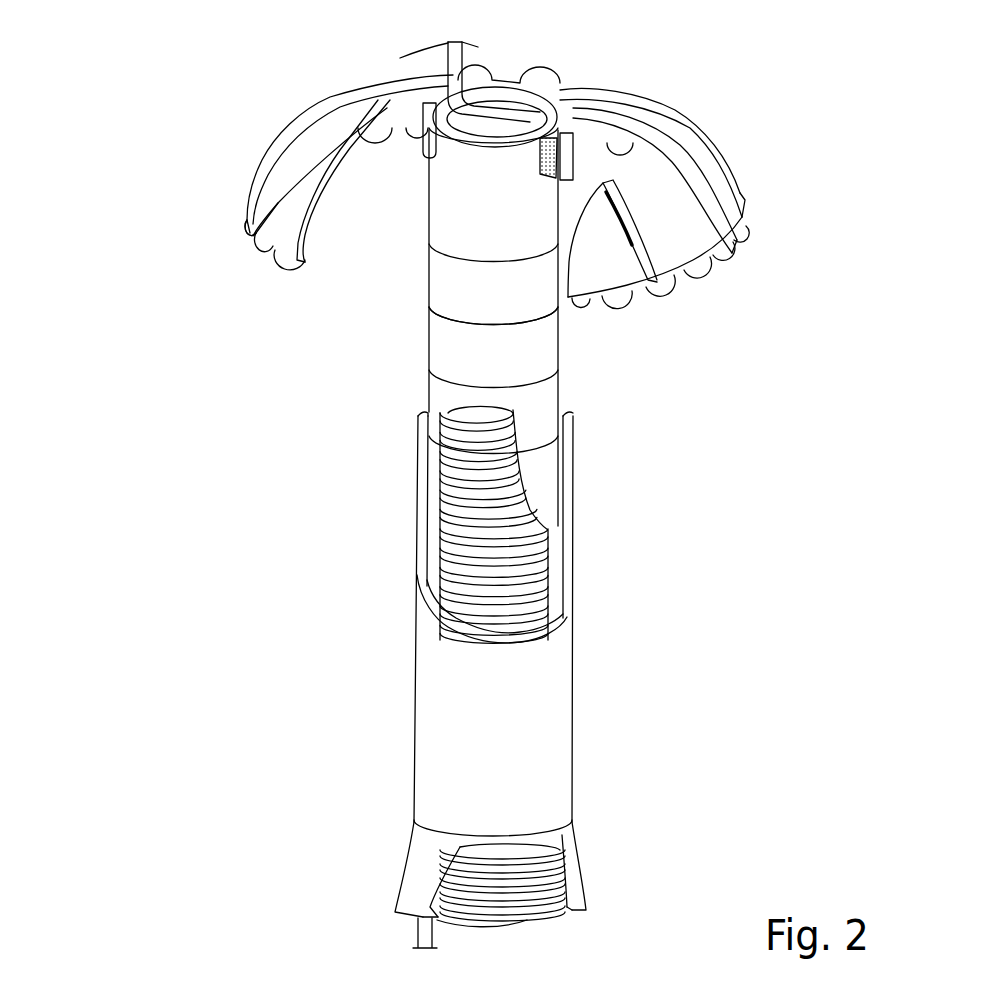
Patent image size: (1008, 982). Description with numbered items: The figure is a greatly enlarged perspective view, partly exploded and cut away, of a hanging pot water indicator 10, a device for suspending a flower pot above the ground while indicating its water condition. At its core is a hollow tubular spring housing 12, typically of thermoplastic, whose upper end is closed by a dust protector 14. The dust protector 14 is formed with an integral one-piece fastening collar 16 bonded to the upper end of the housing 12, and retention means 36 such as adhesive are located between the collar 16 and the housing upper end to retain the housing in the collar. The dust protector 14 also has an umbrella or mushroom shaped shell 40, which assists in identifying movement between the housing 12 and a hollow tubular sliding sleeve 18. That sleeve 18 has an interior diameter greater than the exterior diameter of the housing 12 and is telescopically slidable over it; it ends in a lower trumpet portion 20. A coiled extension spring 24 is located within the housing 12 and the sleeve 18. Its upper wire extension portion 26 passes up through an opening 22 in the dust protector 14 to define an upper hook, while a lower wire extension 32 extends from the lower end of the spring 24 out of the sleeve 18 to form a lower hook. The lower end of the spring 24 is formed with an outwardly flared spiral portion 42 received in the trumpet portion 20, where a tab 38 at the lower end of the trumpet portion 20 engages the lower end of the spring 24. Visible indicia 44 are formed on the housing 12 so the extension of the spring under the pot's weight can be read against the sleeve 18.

The hanging pot water indicator 10 is at (147, 462).
The tubular spring housing 12 is at (535, 355).
The dust protector 14 is at (610, 60).
The fastening collar 16 is at (422, 148).
The sliding sleeve 18 is at (558, 692).
The trumpet portion 20 is at (410, 855).
The opening 22 is at (385, 82).
The coiled extension spring 24 is at (480, 483).
The upper wire extension portion 26 is at (448, 44).
The lower wire extension 32 is at (413, 933).
The retention means 36 is at (540, 160).
The tab 38 is at (447, 927).
The umbrella shaped shell 40 is at (253, 237).
The outwardly flared spiral portion 42 is at (530, 887).
The visible indicia 44 is at (430, 316).